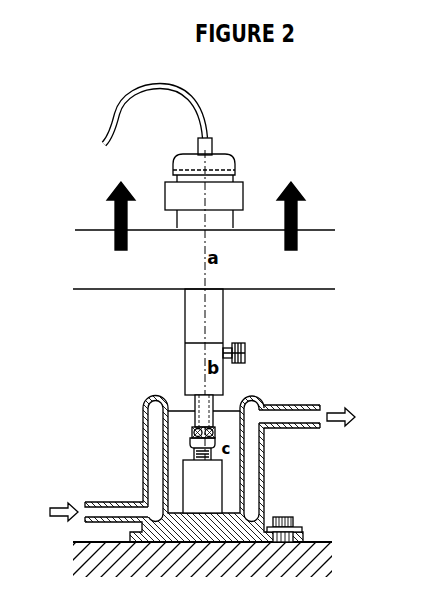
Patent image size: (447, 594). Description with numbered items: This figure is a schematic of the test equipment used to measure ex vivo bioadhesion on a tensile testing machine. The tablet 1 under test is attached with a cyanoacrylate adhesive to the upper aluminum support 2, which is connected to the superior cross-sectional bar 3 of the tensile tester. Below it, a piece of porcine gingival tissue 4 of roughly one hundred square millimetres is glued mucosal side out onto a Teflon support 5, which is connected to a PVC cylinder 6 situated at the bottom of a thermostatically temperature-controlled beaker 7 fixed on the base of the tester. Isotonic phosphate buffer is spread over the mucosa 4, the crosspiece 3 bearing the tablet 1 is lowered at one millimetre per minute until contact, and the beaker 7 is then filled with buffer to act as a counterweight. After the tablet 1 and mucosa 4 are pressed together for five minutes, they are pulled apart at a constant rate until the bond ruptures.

The tablet 1 is at (213, 430).
The upper aluminum support 2 is at (200, 412).
The superior cross-sectional bar 3 is at (312, 257).
The porcine gingival tissue 4 is at (197, 435).
The Teflon support 5 is at (207, 442).
The PVC cylinder 6 is at (218, 493).
The thermostatically temperature-controlled beaker 7 is at (142, 462).